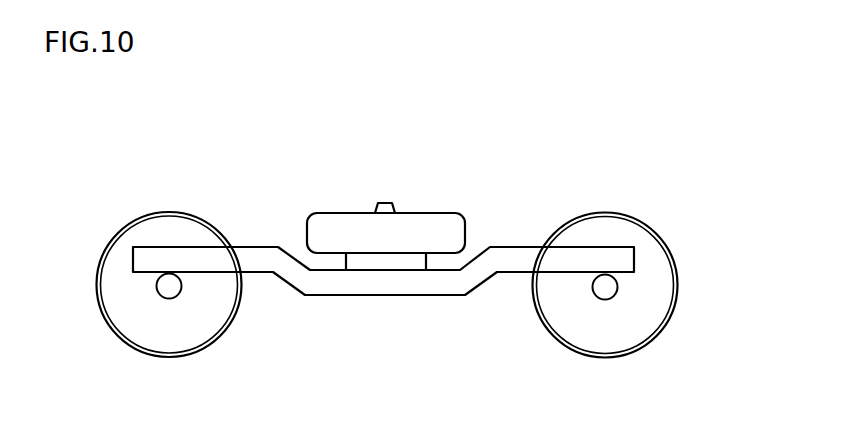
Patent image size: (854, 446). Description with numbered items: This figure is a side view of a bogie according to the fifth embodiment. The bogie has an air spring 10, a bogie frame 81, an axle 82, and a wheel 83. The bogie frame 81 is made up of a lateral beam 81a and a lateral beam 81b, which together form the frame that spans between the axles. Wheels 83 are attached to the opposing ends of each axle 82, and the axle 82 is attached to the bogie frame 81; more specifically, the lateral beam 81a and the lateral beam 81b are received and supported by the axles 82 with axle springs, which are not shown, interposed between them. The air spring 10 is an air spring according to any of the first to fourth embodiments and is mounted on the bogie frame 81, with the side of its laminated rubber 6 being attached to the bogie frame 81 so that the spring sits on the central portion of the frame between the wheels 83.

The air spring 10 is at (418, 197).
The laminated rubber 6 is at (362, 262).
The bogie frame 81 is at (523, 360).
The lateral beam 81a is at (270, 265).
The lateral beam 81b is at (505, 265).
The axle 82 is at (168, 298).
The wheel 83 is at (215, 310).